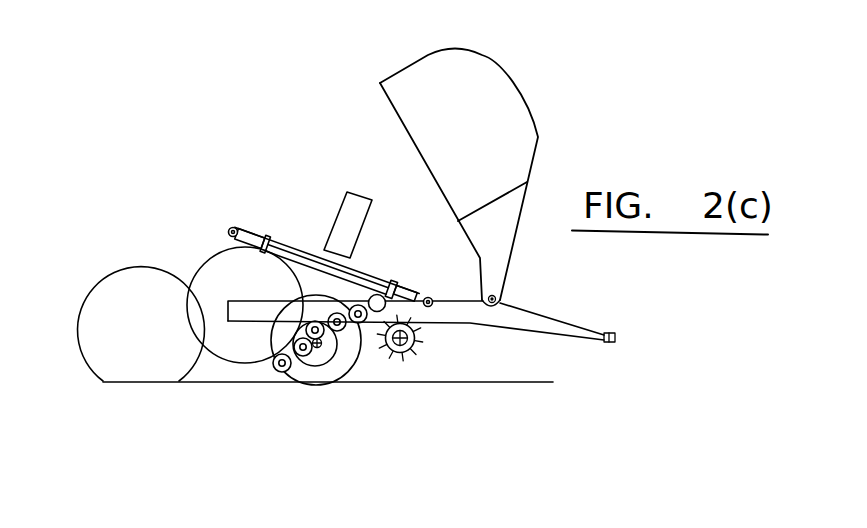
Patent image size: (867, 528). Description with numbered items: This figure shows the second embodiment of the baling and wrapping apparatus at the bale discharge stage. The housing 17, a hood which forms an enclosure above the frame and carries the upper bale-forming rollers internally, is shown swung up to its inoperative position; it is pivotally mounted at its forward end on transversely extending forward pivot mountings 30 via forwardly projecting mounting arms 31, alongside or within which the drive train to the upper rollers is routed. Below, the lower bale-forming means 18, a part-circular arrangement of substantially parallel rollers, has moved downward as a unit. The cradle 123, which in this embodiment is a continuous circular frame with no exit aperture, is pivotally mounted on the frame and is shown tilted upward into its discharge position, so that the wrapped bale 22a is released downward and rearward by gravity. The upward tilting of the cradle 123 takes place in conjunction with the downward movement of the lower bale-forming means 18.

The housing 17 is at (487, 98).
The mounting arms 31 is at (505, 220).
The forward pivot mountings 30 is at (500, 297).
The wrapped bale 22a is at (138, 288).
The cradle 123 is at (425, 300).
The lower bale-forming means 18 is at (345, 367).